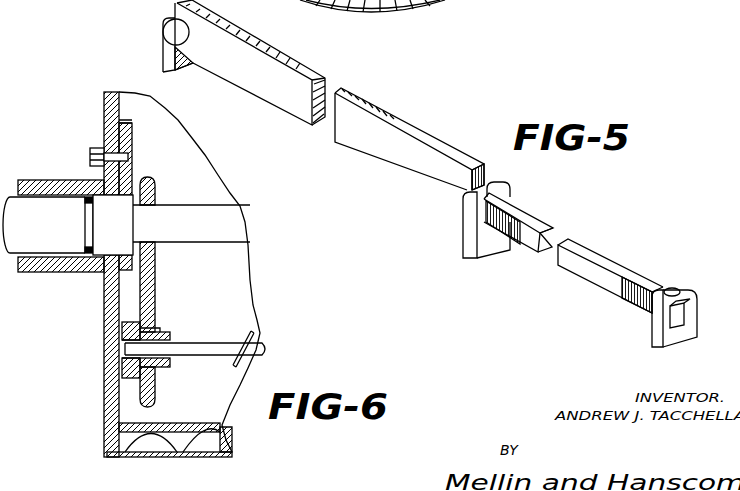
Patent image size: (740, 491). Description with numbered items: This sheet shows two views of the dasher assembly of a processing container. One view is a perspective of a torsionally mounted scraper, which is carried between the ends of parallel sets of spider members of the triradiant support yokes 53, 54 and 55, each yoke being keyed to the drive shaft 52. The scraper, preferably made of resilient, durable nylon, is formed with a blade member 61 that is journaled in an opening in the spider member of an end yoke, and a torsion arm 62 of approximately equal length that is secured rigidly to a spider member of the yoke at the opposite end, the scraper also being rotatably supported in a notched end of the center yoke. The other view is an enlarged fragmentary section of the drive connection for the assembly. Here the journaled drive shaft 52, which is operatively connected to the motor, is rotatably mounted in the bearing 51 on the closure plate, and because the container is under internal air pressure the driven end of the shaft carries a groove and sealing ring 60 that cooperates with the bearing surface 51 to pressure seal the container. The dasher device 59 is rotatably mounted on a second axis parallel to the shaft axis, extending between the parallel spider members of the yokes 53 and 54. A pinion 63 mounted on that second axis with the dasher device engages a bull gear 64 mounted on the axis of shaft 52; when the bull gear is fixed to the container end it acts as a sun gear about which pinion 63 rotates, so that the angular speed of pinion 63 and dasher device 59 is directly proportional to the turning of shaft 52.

In FIG. 6, the bearing 51 is at (50, 200).
In FIG. 6, the drive shaft 52 is at (203, 190).
In FIG. 5, the triradiant support yoke 53 is at (164, 51).
In FIG. 6, the triradiant support yoke 53 is at (155, 296).
In FIG. 5, the triradiant support yoke 54 is at (465, 242).
In FIG. 5, the triradiant support yoke 55 is at (657, 337).
In FIG. 6, the dasher device 59 is at (210, 343).
In FIG. 6, the sealing ring 60 is at (90, 252).
In FIG. 5, the blade member 61 is at (396, 127).
In FIG. 5, the torsion arm 62 is at (600, 262).
In FIG. 6, the pinion 63 is at (130, 378).
In FIG. 6, the bull gear 64 is at (122, 308).